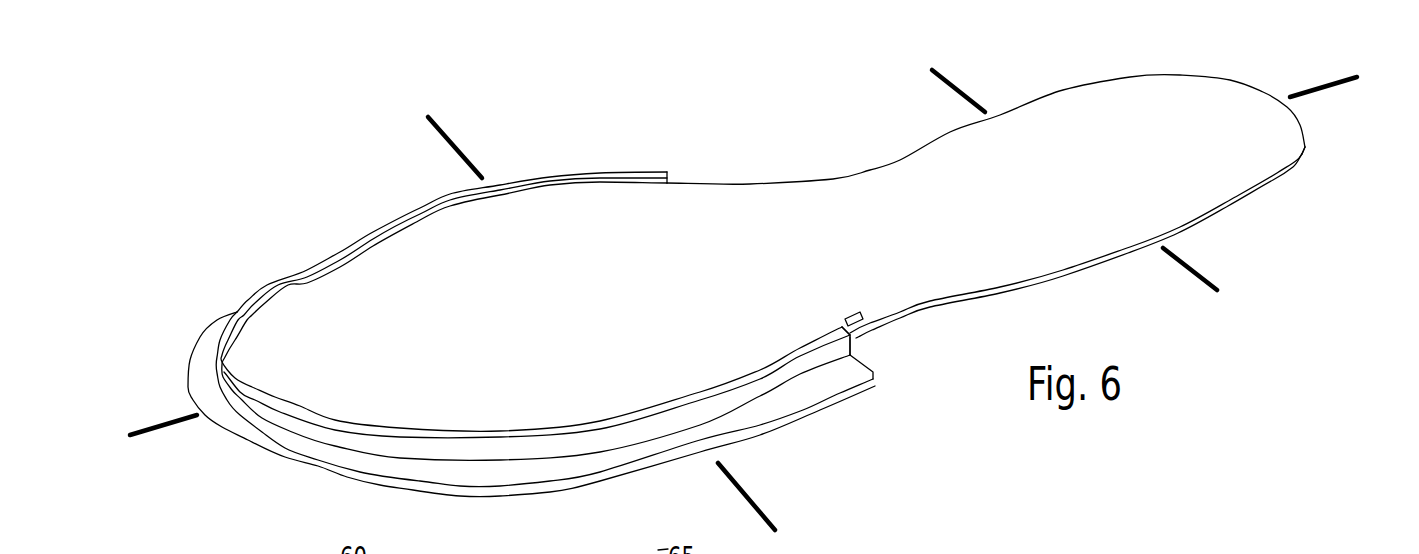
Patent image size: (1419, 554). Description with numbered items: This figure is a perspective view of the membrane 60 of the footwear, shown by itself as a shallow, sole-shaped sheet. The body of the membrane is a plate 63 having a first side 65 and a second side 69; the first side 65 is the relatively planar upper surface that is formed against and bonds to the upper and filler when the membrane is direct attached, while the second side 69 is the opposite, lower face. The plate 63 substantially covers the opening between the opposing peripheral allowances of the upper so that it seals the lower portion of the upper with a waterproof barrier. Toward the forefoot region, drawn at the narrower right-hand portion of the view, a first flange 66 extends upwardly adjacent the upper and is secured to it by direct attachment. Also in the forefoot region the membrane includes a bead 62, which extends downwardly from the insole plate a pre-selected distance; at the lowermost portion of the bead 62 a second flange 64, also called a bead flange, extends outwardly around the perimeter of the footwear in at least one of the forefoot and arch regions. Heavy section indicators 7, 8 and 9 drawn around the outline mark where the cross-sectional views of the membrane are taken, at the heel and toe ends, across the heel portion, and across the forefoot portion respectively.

The membrane 60 is at (380, 192).
The bead 62 is at (870, 347).
The plate 63 is at (767, 272).
The second flange 64 is at (835, 377).
The first side 65 is at (701, 208).
The first flange 66 is at (848, 322).
The second side 69 is at (596, 378).
The section line 7- 7 is at (178, 437).
The section line 8- 8 is at (462, 142).
The section line 9- 9 is at (947, 98).